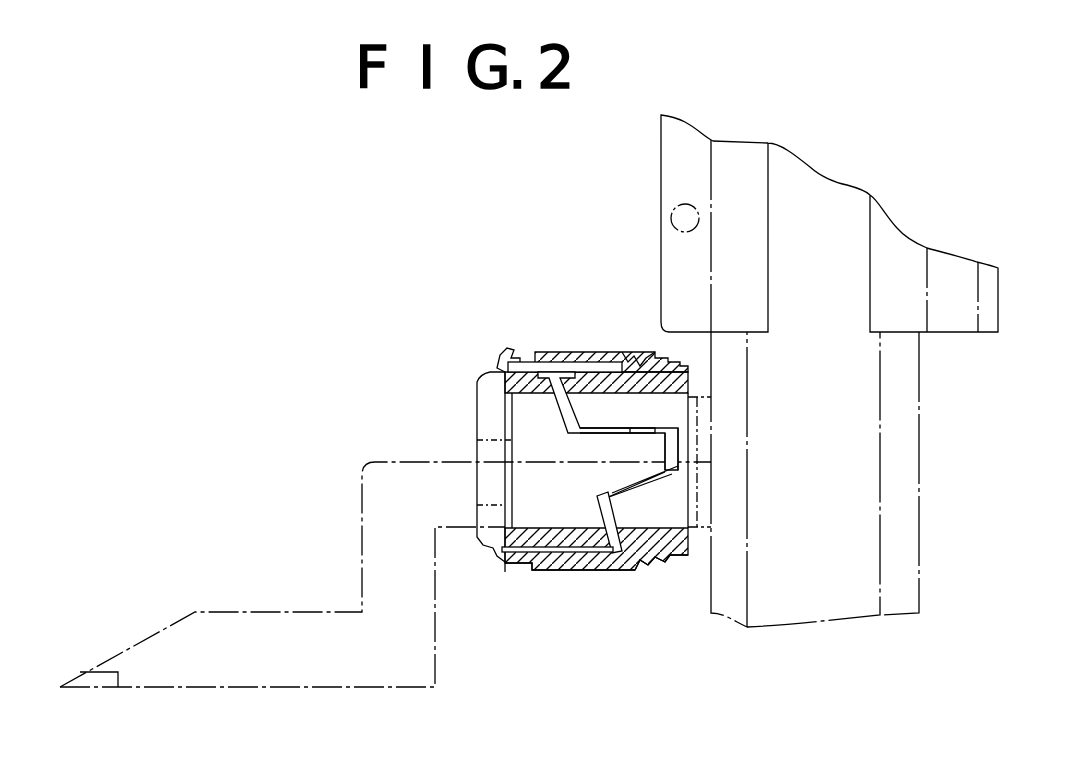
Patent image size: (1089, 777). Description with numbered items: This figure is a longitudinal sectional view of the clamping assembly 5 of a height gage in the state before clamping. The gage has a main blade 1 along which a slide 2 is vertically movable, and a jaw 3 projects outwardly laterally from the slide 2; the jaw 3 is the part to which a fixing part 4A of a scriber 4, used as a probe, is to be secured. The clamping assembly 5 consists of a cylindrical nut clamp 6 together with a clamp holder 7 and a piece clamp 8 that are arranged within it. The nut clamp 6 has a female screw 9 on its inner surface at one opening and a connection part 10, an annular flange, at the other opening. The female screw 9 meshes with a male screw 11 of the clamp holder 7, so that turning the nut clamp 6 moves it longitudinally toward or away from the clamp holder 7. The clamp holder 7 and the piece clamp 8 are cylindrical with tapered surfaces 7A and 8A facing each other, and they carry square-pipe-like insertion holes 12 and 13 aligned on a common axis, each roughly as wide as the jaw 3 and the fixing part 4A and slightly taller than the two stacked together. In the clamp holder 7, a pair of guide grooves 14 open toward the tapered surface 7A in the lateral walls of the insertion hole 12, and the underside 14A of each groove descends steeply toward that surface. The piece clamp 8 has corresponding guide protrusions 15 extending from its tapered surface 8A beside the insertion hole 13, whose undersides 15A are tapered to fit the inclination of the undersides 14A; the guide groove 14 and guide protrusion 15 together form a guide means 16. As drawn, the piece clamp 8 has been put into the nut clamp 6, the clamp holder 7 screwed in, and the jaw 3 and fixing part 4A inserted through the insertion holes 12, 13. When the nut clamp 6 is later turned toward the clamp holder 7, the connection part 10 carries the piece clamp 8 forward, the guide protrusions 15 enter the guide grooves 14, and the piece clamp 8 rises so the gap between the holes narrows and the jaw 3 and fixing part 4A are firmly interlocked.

The main blade 1 is at (919, 565).
The slide 2 is at (998, 312).
The jaw 3 is at (505, 440).
The scriber 4 is at (435, 663).
The fixing part 4A is at (552, 572).
The clamping assembly 5 is at (578, 247).
The nut clamp 6 is at (500, 358).
The clamp holder 7 is at (580, 372).
The tapered surface 7A is at (597, 500).
The piece clamp 8 is at (544, 362).
The tapered surface 8A is at (614, 528).
The female screw 9 is at (668, 560).
The connection part 10 is at (477, 375).
The male screw 11 is at (640, 572).
The insertion hole 12 is at (690, 507).
The insertion hole 13 is at (520, 530).
The guide groove 14 is at (640, 430).
The underside of guide groove 14A is at (680, 436).
The guide protrusion 15 is at (600, 446).
The underside of guide protrusion 15A is at (675, 468).
The guide means 16 is at (655, 280).